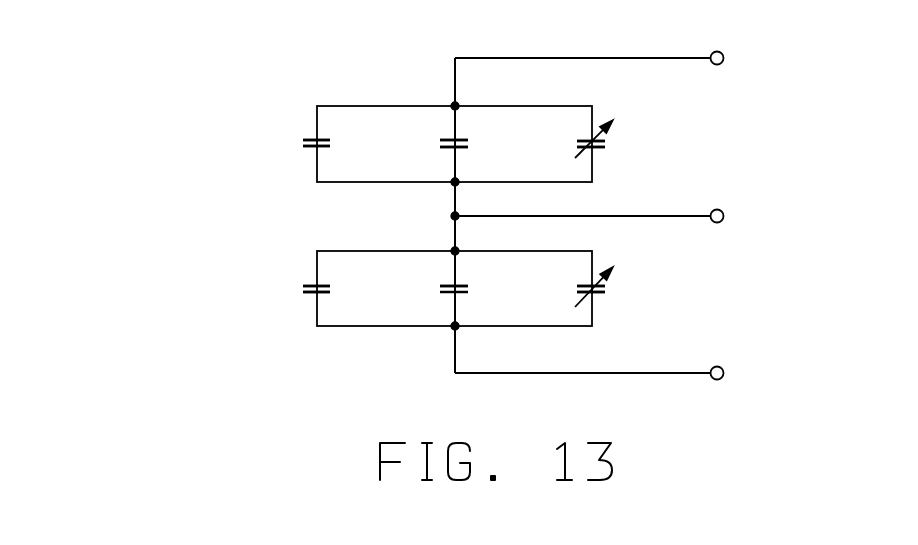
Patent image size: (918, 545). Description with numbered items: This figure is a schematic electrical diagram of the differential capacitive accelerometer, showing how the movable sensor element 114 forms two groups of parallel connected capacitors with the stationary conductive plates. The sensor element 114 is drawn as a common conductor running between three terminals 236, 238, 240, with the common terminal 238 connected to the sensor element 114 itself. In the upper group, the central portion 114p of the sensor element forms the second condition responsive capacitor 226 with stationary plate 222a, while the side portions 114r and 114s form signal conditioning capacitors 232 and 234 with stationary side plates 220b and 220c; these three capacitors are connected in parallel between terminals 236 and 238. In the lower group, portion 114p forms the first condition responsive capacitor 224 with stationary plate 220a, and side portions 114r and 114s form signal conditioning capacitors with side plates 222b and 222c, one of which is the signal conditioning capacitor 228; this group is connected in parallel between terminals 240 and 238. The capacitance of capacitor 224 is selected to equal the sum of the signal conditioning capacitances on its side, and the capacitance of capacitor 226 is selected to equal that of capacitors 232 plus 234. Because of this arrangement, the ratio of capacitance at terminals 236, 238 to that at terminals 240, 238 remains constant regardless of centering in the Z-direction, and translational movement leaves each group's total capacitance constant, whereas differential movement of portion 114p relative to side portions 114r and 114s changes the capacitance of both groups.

The sensor element 114 is at (452, 202).
The side portion of sensor element 114r is at (305, 148).
The side portion of sensor element 114s is at (458, 148).
The portion of sensor element 114p is at (598, 148).
The stationary electrically conductive plate 220a is at (602, 293).
The stationary side plate 220b is at (310, 140).
The stationary side plate 220c is at (443, 137).
The stationary electrically conductive plate 222a is at (562, 126).
The stationary side plate 222b is at (328, 293).
The stationary side plate 222c is at (443, 292).
The first condition responsive capacitor 224 is at (624, 274).
The second condition responsive capacitor 226 is at (622, 138).
The signal conditioning capacitor 228 is at (286, 292).
The signal conditioning capacitor 232 is at (287, 149).
The signal conditioning capacitor 234 is at (424, 136).
The terminal 236 is at (612, 58).
The terminal 238 is at (614, 216).
The terminal 240 is at (614, 374).